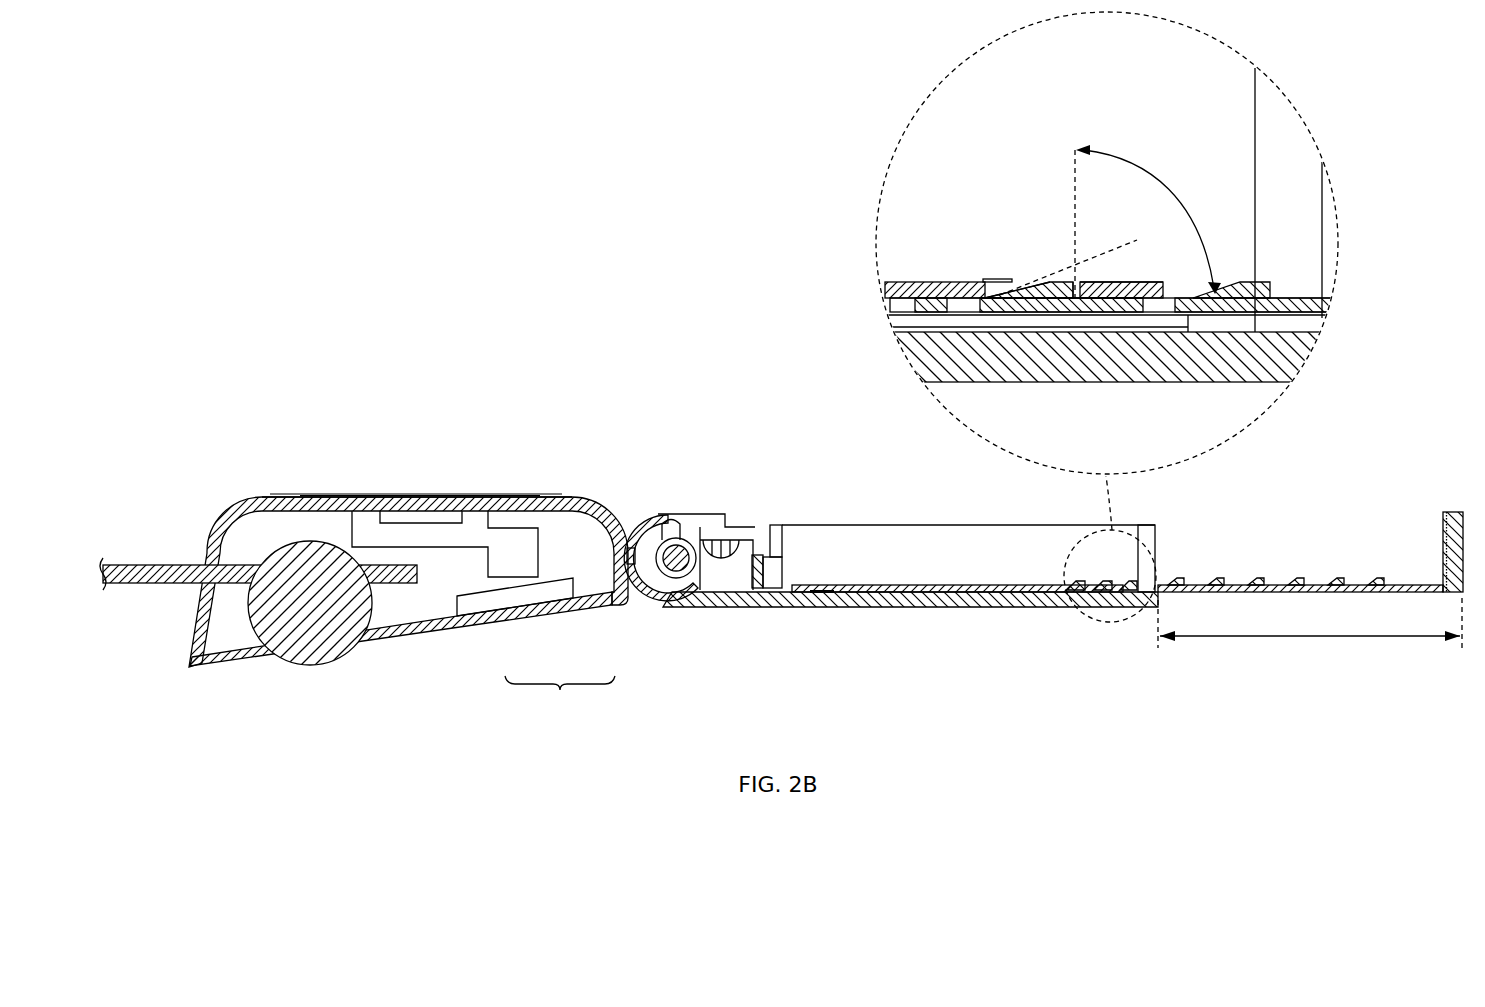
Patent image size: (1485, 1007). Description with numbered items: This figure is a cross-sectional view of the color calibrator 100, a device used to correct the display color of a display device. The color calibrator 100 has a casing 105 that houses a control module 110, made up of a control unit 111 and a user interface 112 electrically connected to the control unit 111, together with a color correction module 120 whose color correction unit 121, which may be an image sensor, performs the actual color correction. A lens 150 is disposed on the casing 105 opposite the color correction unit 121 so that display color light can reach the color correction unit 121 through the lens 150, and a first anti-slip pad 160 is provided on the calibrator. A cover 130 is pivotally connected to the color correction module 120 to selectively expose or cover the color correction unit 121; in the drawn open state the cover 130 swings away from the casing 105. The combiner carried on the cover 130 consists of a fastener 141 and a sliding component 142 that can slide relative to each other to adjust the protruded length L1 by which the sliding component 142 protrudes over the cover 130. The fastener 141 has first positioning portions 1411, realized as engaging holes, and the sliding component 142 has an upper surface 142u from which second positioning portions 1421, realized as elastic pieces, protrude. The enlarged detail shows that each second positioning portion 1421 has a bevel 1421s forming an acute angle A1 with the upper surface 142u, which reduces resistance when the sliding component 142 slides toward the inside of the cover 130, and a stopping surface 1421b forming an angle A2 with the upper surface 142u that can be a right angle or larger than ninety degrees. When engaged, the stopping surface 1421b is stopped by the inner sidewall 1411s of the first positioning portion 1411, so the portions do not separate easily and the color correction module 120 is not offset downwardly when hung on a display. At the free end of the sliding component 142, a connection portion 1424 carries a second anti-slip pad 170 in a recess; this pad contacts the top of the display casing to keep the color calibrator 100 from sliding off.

The color calibrator 100 is at (597, 376).
The casing 105 is at (228, 512).
The control module 110 is at (560, 694).
The control unit 111 is at (520, 600).
The user interface 112 is at (585, 605).
The color correction module 120 is at (470, 540).
The color correction unit 121 is at (418, 516).
The cover 130 is at (790, 608).
The fastener 141 is at (905, 282).
The sliding component 142 is at (1243, 282).
The lens 150 is at (420, 507).
The first anti-slip pad 160 is at (498, 497).
The second anti-slip pad 170 is at (1443, 556).
The first positioning portion 1411 is at (995, 280).
The inner sidewall 1411s is at (1057, 292).
The second positioning portion 1421 is at (1057, 280).
The bevel 1421s is at (1023, 288).
The stopping surface 1421b is at (1107, 292).
The connection portion 1424 is at (1450, 513).
The upper surface 142u is at (1133, 282).
The angle A1 is at (1107, 262).
The angle A2 is at (1180, 192).
The protruded length L1 is at (1310, 623).